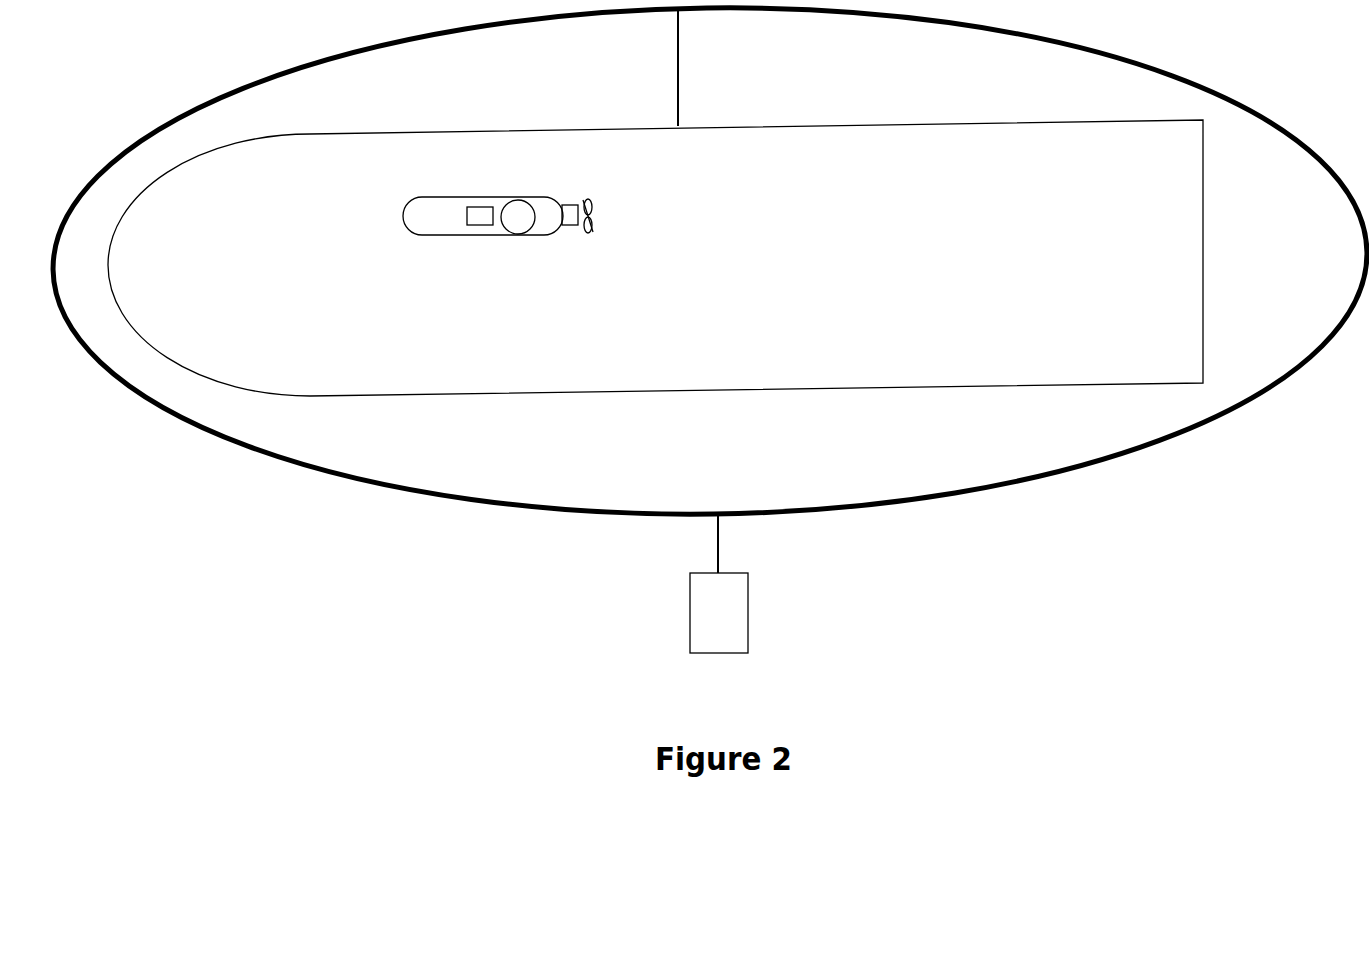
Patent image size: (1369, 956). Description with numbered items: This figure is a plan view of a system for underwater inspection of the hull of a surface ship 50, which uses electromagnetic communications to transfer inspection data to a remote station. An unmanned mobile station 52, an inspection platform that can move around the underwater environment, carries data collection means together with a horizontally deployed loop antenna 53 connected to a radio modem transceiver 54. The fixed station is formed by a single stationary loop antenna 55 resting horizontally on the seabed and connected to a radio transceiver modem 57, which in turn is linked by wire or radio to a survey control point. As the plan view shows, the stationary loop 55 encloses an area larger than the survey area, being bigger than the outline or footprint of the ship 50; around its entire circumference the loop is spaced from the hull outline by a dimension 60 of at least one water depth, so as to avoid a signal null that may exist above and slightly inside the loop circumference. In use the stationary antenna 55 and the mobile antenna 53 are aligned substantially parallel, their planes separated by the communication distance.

The surface ship 50 is at (1018, 367).
The mobile station 52 is at (384, 220).
The loop antenna 53 is at (534, 226).
The radio modem transceiver 54 is at (448, 236).
The stationary loop antenna 55 is at (302, 481).
The radio transceiver modem 57 is at (852, 573).
The dimension 60 is at (698, 68).